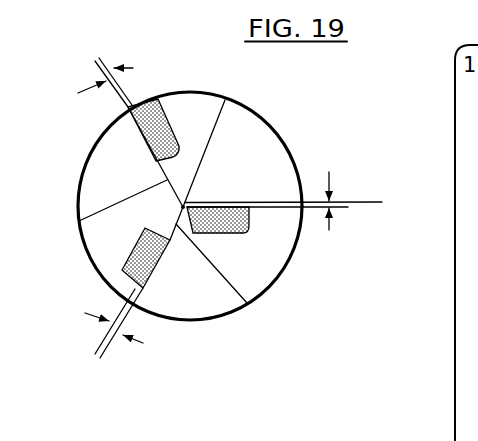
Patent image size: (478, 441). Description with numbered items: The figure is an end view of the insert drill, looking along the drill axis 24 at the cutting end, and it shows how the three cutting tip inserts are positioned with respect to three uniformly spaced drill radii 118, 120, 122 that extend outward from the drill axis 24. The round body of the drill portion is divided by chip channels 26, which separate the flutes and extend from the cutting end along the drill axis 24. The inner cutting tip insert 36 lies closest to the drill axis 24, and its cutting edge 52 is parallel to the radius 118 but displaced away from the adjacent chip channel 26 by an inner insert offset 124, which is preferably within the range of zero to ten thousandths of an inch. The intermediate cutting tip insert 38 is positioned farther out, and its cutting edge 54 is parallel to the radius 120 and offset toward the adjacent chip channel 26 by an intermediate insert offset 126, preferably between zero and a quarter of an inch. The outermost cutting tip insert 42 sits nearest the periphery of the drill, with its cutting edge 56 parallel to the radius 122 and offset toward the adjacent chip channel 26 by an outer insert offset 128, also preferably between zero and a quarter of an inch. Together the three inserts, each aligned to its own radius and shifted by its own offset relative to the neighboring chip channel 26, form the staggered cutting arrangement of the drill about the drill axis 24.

The drill axis 24 is at (180, 207).
The chip channels 26 is at (107, 184).
The inner cutting tip insert 36 is at (249, 234).
The intermediate cutting tip insert 38 is at (123, 270).
The outermost cutting tip insert 42 is at (159, 99).
The cutting edge 52 is at (237, 203).
The cutting edge 54 is at (160, 270).
The cutting edge 56 is at (141, 132).
The drill radius 118 is at (383, 199).
The drill radius 120 is at (95, 352).
The drill radius 122 is at (104, 60).
The inner insert offset 124 is at (328, 181).
The intermediate insert offset 126 is at (155, 346).
The outer insert offset 128 is at (148, 56).